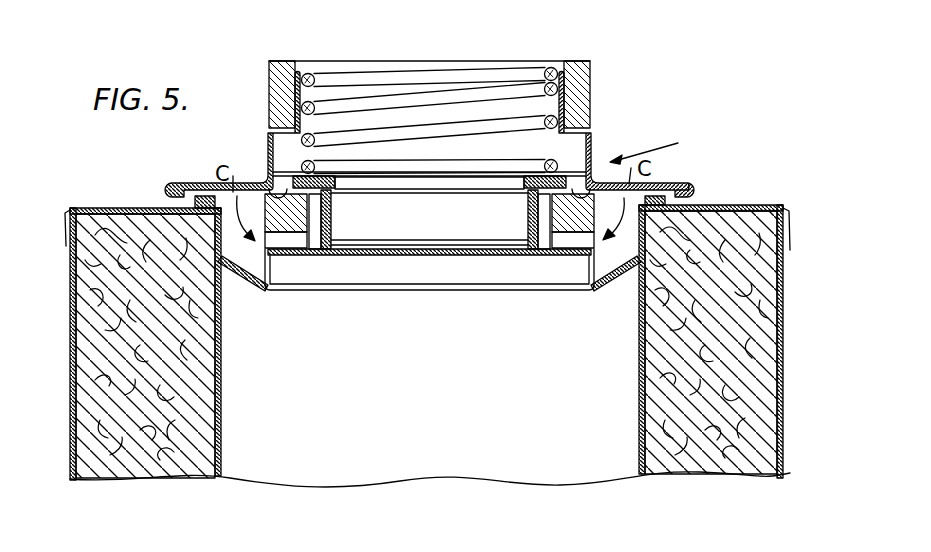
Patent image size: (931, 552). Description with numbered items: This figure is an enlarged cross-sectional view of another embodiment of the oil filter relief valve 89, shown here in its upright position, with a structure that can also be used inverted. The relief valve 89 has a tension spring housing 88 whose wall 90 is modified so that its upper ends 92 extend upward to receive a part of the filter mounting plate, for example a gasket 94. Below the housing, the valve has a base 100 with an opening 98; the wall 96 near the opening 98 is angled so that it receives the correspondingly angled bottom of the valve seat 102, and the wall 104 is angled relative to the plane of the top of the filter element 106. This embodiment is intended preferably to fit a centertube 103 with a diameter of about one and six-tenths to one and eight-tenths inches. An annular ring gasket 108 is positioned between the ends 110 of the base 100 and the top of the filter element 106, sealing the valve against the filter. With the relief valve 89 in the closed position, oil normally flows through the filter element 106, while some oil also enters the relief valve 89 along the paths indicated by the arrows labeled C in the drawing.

The tension spring housing 88 is at (268, 166).
The relief valve 89 is at (663, 145).
The wall 90 is at (592, 140).
The upper ends 92 is at (560, 90).
The gasket 94 is at (273, 74).
The wall 96 is at (341, 255).
The opening 98 is at (445, 273).
The base 100 is at (630, 263).
The valve seat 102 is at (332, 216).
The centertube 103 is at (598, 445).
The wall 104 is at (237, 273).
The filter element 106 is at (757, 350).
The annular ring gasket 108 is at (692, 201).
The ends 110 is at (690, 184).